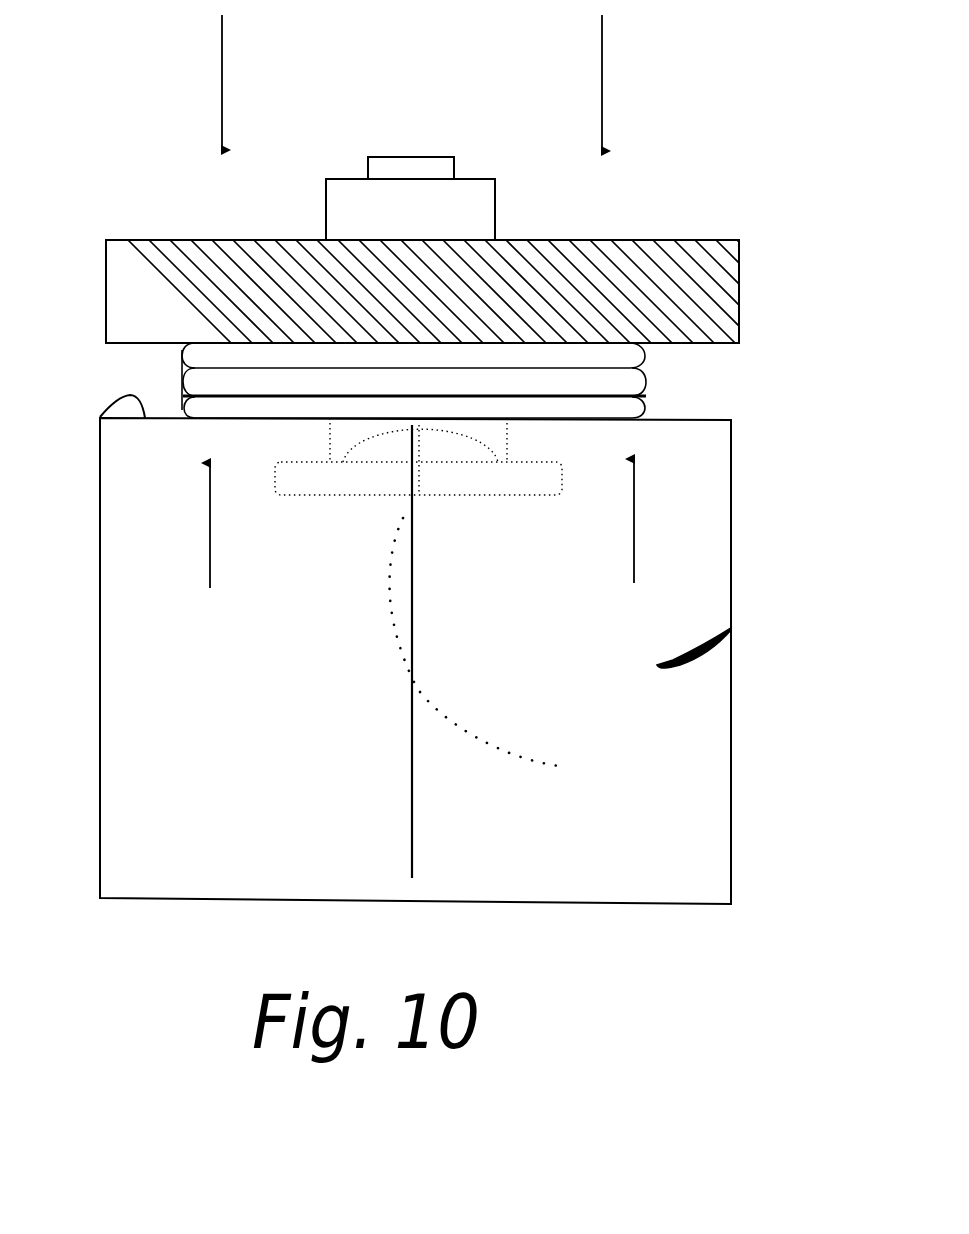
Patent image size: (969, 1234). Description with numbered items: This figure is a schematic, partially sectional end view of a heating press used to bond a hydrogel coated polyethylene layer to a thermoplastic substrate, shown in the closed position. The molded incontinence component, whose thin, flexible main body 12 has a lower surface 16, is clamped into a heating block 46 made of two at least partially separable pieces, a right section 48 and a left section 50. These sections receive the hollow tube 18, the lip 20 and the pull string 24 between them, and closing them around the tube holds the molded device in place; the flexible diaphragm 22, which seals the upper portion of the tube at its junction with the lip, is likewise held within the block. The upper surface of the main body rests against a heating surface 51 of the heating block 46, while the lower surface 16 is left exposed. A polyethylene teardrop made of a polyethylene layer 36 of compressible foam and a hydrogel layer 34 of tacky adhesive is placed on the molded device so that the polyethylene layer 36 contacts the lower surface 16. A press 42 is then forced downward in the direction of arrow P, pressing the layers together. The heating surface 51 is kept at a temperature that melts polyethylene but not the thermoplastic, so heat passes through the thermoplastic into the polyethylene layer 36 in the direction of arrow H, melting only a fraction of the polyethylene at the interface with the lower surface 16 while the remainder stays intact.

The press 42 is at (710, 240).
The hydrogel layer 34 is at (645, 368).
The polyethylene layer 36 is at (640, 397).
The main body 12 is at (645, 418).
The lower surface 16 is at (183, 397).
The heating surface 51 is at (100, 416).
The left section 50 is at (160, 758).
The right section 48 is at (682, 808).
The hollow tube 18 is at (507, 443).
The flexible diaphragm 22 is at (363, 442).
The lip 20 is at (447, 482).
The pull string 24 is at (540, 766).
The heating block 46 is at (731, 628).
The arrow P is at (222, 102).
The arrow H is at (210, 542).